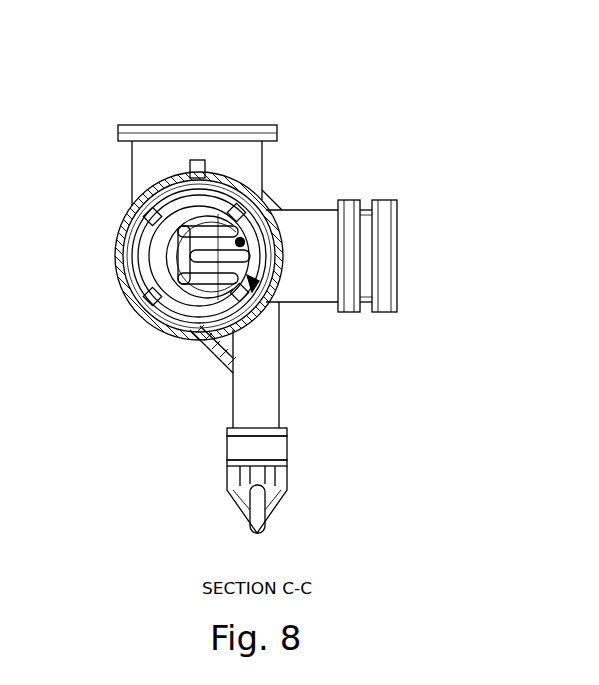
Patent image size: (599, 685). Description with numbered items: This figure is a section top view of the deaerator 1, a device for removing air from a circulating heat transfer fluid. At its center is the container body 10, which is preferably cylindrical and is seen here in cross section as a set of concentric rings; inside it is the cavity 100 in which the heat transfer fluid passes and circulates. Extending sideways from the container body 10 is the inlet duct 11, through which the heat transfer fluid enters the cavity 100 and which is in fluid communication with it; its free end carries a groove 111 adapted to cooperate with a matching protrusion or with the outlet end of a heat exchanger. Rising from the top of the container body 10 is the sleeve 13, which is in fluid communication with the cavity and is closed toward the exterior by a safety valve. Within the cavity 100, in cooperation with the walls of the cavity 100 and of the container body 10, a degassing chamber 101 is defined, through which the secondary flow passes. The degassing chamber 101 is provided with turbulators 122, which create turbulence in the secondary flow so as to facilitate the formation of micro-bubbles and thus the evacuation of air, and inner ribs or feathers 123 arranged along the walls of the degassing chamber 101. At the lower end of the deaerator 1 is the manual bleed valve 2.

The deaerator 1 is at (138, 100).
The manual bleed valve 2 is at (285, 450).
The container body 10 is at (153, 327).
The inlet duct 11 is at (388, 212).
The sleeve 13 is at (245, 152).
The cavity 100 is at (282, 315).
The degassing chamber 101 is at (278, 207).
The groove 111 is at (368, 311).
The turbulator 122 is at (116, 268).
The inner ribs or feathers 123 is at (123, 242).